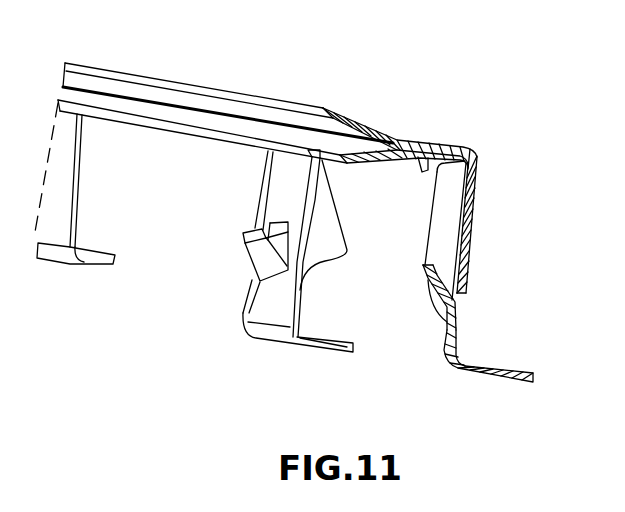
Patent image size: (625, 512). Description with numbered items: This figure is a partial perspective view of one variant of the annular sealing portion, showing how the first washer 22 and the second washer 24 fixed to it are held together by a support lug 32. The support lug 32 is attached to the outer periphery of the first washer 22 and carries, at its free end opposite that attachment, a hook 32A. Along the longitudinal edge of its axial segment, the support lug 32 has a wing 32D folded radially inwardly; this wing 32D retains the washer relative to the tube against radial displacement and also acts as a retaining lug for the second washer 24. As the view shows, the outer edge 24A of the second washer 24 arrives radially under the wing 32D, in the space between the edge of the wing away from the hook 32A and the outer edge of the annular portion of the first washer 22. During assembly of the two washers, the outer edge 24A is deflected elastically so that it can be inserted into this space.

The first washer 22 is at (222, 90).
The second washer 24 is at (428, 167).
The outer edge of the second washer 24A is at (477, 160).
The support lug 32 is at (484, 271).
The wing 32D is at (445, 220).
The hook 32A is at (495, 367).